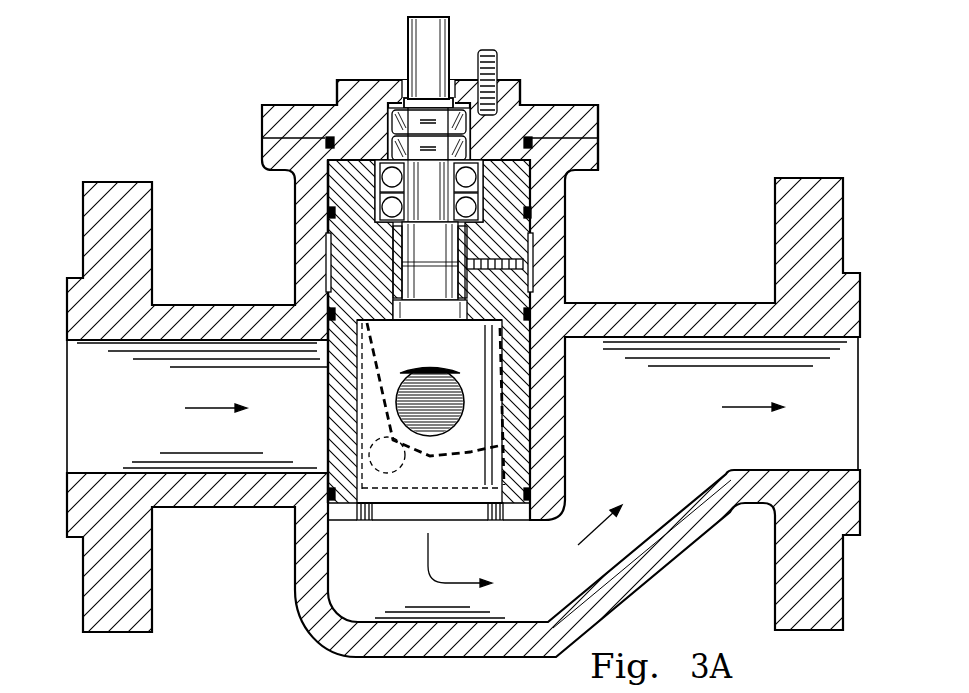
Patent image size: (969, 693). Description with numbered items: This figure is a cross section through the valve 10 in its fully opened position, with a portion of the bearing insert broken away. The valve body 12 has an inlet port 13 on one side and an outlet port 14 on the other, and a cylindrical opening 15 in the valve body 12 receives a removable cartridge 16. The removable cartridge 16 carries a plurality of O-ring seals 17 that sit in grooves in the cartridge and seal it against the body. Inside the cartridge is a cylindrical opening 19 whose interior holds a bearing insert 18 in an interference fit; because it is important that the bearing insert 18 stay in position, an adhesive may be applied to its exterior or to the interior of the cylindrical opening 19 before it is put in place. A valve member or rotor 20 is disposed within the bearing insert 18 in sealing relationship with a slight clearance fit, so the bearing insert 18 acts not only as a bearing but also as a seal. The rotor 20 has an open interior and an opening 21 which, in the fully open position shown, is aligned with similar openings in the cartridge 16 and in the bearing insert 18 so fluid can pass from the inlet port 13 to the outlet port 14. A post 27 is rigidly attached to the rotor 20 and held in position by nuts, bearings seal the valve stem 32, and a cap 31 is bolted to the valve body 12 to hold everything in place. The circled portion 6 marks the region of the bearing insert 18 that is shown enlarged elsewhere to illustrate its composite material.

The valve assembly 10 is at (466, 361).
The valve body 12 is at (308, 616).
The inlet port 13 is at (95, 400).
The outlet port 14 is at (858, 412).
The cylindrical opening 15 is at (332, 205).
The removable cartridge 16 is at (503, 242).
The O-ring seals 17 is at (532, 216).
The bearing insert 18 is at (482, 473).
The cylindrical opening 19 is at (353, 402).
The rotor 20 is at (463, 355).
The opening 21 is at (428, 373).
The post 27 is at (442, 44).
The cap 31 is at (297, 108).
The valve stem 32 is at (390, 47).
The circled portion 6 is at (386, 473).